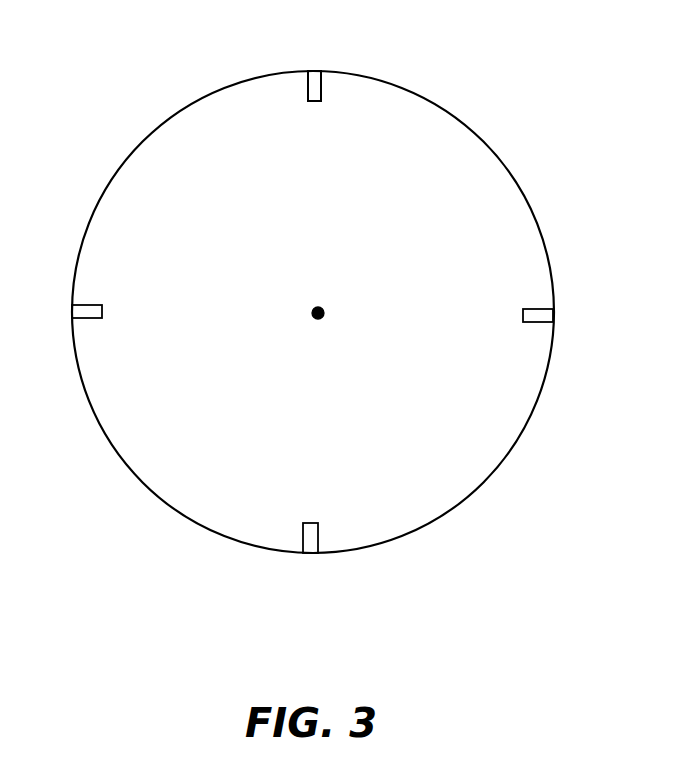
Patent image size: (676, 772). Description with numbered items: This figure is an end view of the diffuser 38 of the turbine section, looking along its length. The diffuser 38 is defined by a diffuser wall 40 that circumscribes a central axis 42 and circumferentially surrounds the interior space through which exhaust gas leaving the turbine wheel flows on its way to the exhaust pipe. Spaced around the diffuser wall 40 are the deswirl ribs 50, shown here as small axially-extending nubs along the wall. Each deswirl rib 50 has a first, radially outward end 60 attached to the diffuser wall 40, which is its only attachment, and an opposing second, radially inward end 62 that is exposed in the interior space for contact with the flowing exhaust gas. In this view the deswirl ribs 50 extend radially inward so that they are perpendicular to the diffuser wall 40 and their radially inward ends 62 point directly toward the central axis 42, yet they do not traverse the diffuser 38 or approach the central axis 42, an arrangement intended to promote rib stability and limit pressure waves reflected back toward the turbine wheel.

The diffuser 38 is at (120, 113).
The diffuser wall 40 is at (449, 109).
The central axis 42 is at (320, 307).
The deswirl ribs 50 is at (308, 88).
The first, radially outward end 60 is at (316, 71).
The second, radially inward end 62 is at (102, 311).